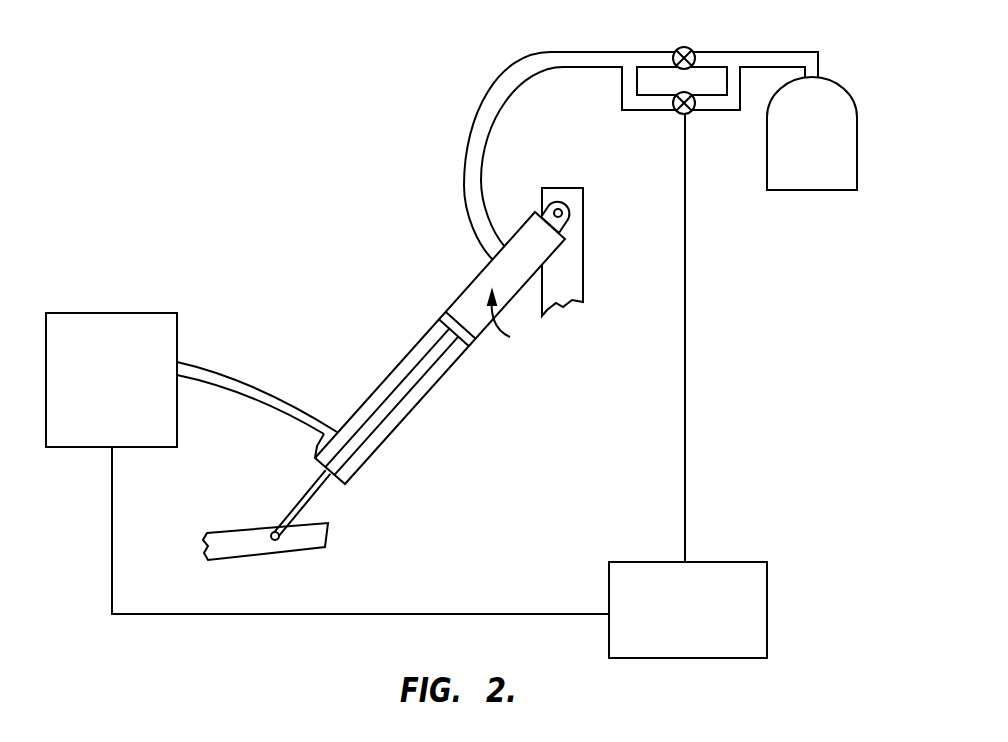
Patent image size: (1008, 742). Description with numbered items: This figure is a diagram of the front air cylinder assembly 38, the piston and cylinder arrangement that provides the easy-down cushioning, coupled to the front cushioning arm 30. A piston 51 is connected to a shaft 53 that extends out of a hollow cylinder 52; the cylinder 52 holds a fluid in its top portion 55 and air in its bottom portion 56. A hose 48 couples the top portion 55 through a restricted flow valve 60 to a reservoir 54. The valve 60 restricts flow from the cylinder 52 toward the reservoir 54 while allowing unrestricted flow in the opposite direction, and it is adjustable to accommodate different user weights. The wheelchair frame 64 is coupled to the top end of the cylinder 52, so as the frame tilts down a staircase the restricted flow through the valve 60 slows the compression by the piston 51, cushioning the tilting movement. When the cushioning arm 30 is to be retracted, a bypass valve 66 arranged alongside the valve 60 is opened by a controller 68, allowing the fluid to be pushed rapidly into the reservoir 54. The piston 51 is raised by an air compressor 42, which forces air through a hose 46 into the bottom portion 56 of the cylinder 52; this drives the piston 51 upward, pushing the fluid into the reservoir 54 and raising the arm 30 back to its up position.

The front cushioning arm 30 is at (233, 540).
The front air cylinder assembly 38 is at (415, 371).
The air compressor 42 is at (145, 313).
The hose 46 is at (260, 380).
The hose 48 is at (512, 78).
The piston 51 is at (456, 311).
The hollow cylinder 52 is at (407, 355).
The shaft 53 is at (303, 497).
The reservoir 54 is at (828, 76).
The top portion 55 is at (512, 322).
The bottom portion 56 is at (377, 435).
The restricted flow valve 60 is at (690, 46).
The wheelchair frame 64 is at (583, 238).
The bypass valve 66 is at (692, 113).
The controller 68 is at (738, 562).